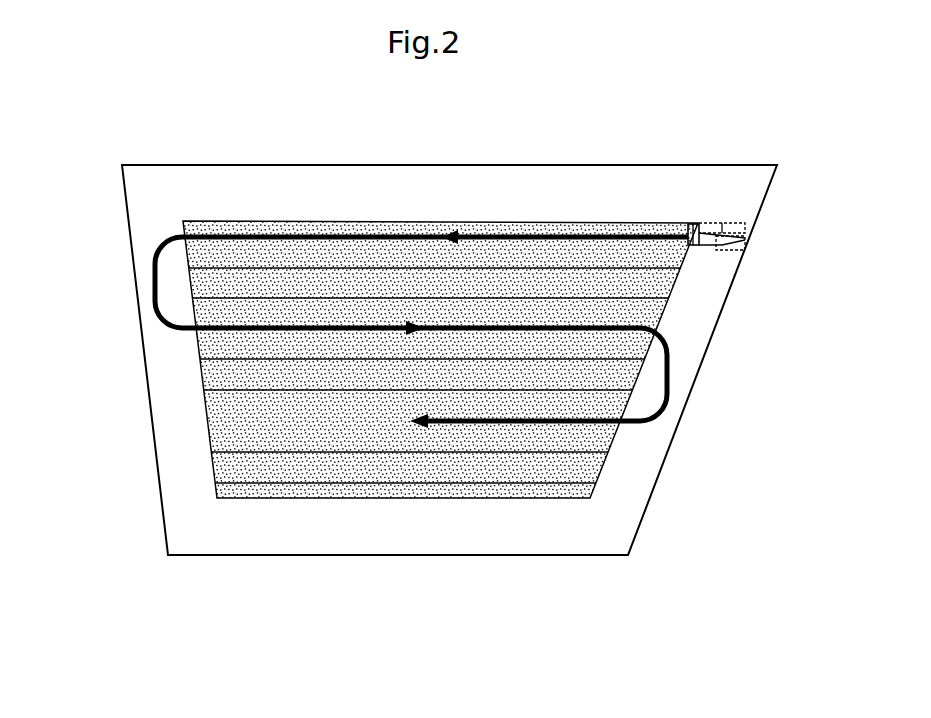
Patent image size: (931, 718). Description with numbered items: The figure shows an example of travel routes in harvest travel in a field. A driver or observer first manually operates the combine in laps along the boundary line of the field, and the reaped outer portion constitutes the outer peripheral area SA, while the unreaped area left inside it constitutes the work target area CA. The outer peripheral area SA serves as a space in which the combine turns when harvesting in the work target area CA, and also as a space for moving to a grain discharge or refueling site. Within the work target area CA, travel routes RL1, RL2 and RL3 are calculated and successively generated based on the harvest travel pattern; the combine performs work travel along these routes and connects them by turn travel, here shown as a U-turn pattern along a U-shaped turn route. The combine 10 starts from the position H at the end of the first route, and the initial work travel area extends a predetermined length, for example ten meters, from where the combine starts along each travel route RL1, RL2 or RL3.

The outer peripheral area SA is at (478, 200).
The work target area CA is at (443, 470).
The travel route RL1 is at (285, 233).
The travel route RL2 is at (260, 330).
The travel route RL3 is at (583, 420).
The hose connection H is at (690, 250).
The cleaning nozzle unit 10 is at (733, 221).